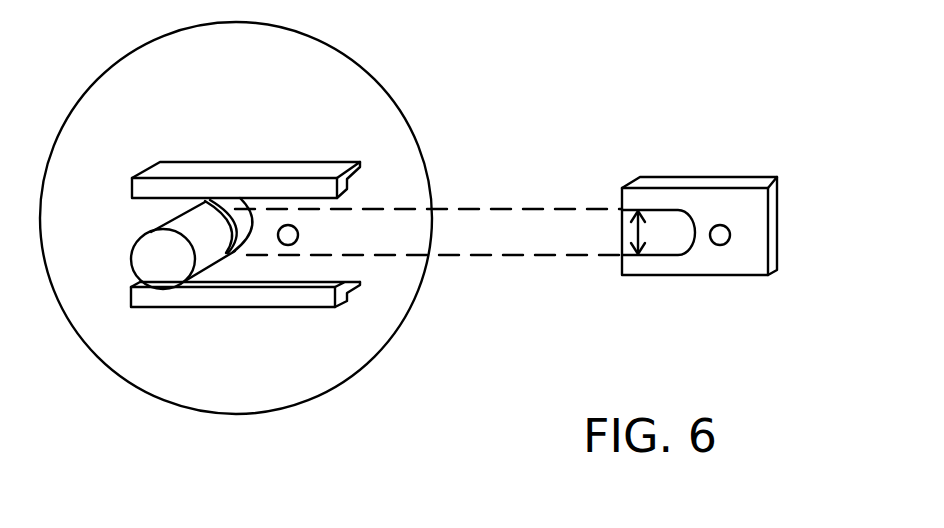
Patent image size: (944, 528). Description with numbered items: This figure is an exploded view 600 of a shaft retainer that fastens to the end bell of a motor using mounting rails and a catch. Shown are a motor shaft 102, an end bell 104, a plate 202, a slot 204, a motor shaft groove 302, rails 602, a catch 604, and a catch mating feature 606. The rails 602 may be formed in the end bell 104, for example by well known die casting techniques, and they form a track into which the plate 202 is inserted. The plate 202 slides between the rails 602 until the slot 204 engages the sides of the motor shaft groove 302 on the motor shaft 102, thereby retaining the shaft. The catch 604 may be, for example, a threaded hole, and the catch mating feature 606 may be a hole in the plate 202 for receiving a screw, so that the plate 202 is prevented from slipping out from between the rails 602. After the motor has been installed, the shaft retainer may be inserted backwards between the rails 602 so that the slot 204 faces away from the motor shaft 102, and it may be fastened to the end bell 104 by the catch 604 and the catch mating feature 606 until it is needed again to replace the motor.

The motor shaft 102 is at (153, 258).
The end bell 104 is at (273, 412).
The plate 202 is at (703, 275).
The slot 204 is at (636, 232).
The motor shaft groove 302 is at (229, 252).
The exploded view 600 is at (567, 78).
The rails 602 is at (318, 168).
The catch 604 is at (296, 231).
The catch mating feature 606 is at (730, 233).